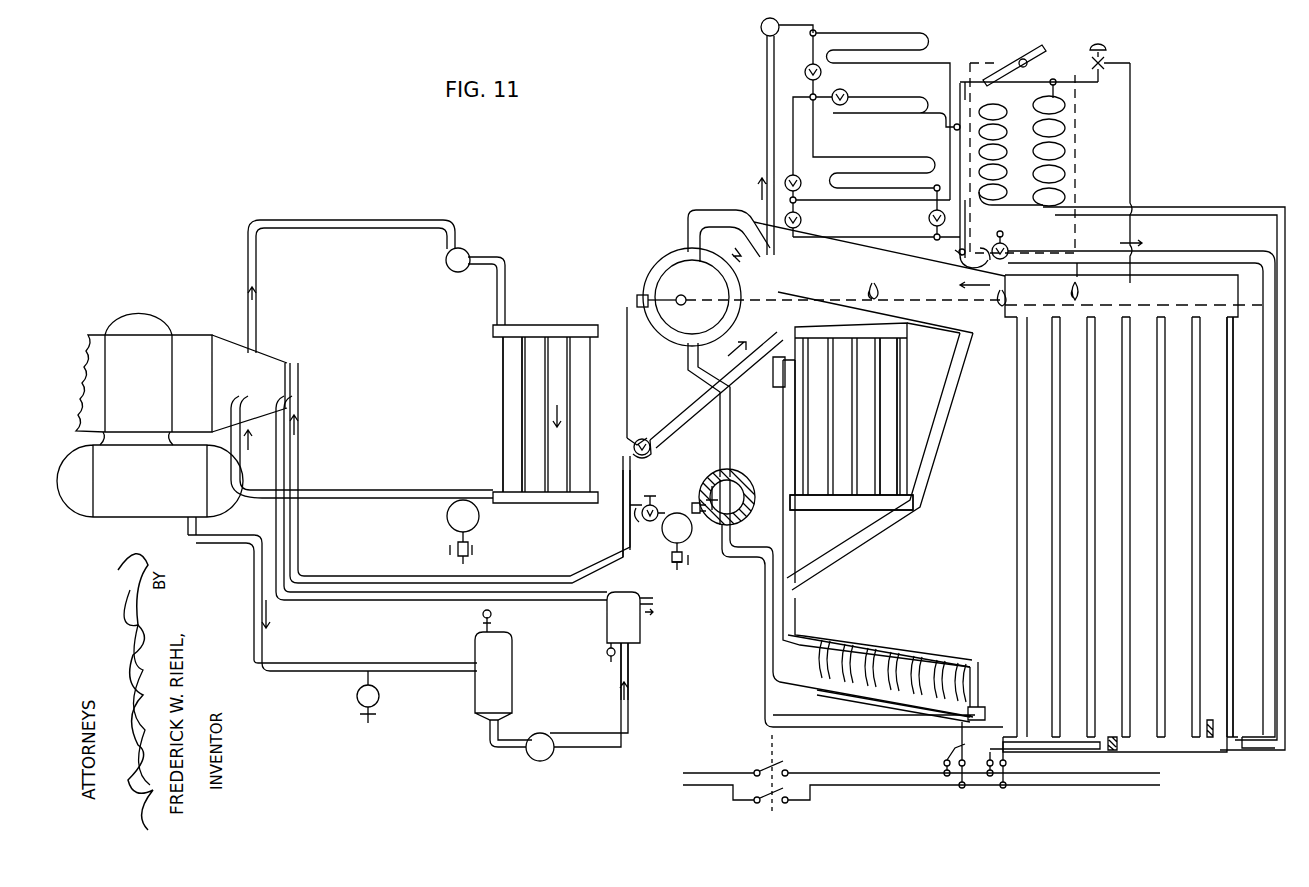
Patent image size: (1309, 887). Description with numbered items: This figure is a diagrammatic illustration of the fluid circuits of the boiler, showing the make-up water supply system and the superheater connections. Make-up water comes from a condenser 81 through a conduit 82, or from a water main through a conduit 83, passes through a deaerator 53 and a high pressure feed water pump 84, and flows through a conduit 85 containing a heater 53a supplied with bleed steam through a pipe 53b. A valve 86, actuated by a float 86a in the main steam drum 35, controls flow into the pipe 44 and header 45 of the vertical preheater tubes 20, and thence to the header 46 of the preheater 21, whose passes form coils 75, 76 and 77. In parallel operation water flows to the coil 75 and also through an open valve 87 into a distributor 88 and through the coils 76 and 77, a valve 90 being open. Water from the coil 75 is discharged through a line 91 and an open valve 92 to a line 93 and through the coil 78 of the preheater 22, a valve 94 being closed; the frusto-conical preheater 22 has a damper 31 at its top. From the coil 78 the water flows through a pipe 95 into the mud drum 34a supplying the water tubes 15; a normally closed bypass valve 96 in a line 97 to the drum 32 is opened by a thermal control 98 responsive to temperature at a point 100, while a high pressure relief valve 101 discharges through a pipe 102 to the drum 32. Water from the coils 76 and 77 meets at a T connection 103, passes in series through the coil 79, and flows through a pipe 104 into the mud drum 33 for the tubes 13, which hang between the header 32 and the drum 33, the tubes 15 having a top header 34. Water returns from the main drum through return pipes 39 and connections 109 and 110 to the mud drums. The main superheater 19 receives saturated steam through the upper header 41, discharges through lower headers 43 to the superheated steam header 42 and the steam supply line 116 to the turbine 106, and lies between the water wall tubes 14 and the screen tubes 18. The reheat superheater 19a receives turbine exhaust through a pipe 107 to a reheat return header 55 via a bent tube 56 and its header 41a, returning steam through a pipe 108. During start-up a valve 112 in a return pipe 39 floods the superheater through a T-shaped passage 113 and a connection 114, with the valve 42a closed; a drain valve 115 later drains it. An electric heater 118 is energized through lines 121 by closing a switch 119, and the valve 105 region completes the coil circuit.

The turbine 106 is at (160, 371).
The condenser 81 is at (150, 490).
The pipe 107 is at (374, 214).
The reheat return header 55 is at (450, 268).
The upwardly bent tube 56 is at (505, 282).
The header of reheat superheater 41a is at (553, 329).
The reheat superheater 19a is at (500, 372).
The pipe 108 is at (404, 490).
The pipe 53b is at (540, 598).
The steam supply line 116 is at (518, 590).
The conduit 82 is at (270, 662).
The conduit 83 is at (376, 715).
The deaerator 53 is at (512, 668).
The high pressure feed water pump 84 is at (549, 733).
The heater 53a is at (640, 616).
The conduit 85 is at (628, 660).
The main steam drum 35 is at (672, 253).
The float 86a is at (637, 298).
The pipe 44 is at (684, 410).
The header 45 is at (724, 353).
The valve 86 is at (648, 452).
The valve 42a is at (646, 503).
The superheated steam header 42 is at (675, 541).
The drain valve 115 is at (682, 568).
The connection 114 is at (696, 510).
The T-shaped passage 113 is at (718, 498).
The valve 112 is at (718, 476).
The water return pipes 39 is at (765, 638).
The water wall tubes 14 is at (792, 561).
The screen tubes 18 is at (868, 548).
The main superheater 19 is at (926, 383).
The upper header 41 is at (900, 336).
The lower headers 43 is at (836, 505).
The top header 32 is at (874, 289).
The header 46 is at (763, 35).
The vertical water preheater tubes 20 is at (762, 129).
The water preheater 21 is at (890, 23).
The coil 75 is at (920, 33).
The valve 87 is at (808, 64).
The distributor 88 is at (810, 95).
The valve 90 is at (845, 90).
The coil 76 is at (920, 100).
The T connection 103 is at (942, 120).
The coil 77 is at (925, 160).
The valve 94 is at (795, 183).
The line 91 is at (878, 200).
The valve 92 is at (801, 222).
The line 93 is at (840, 240).
The valve 105 is at (929, 220).
The temperature sensing point 100 is at (955, 251).
The thermal control 98 is at (970, 268).
The pipe 95 is at (968, 220).
The bypass valve 96 is at (1004, 248).
The line 97 is at (1028, 252).
The water preheater 22 is at (1030, 105).
The damper 31 is at (1050, 46).
The coil 78 is at (1002, 163).
The coil 79 is at (1067, 133).
The high pressure relief valve 101 is at (1107, 78).
The pipe 102 is at (1131, 140).
The pipe 104 is at (1224, 208).
The top header 34 is at (1222, 266).
The water wall tubes 13 is at (1120, 498).
The water wall tubes 15 is at (1257, 498).
The mud drum 33 is at (1182, 752).
The mud drum 34a is at (1242, 749).
The connection 109 is at (884, 730).
The connection 110 is at (850, 718).
The electric heater 118 is at (1070, 750).
The lines 121 is at (713, 782).
The switch 119 is at (788, 829).